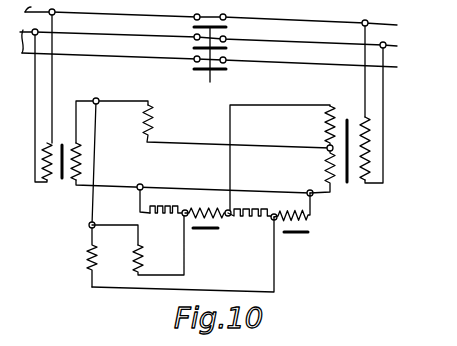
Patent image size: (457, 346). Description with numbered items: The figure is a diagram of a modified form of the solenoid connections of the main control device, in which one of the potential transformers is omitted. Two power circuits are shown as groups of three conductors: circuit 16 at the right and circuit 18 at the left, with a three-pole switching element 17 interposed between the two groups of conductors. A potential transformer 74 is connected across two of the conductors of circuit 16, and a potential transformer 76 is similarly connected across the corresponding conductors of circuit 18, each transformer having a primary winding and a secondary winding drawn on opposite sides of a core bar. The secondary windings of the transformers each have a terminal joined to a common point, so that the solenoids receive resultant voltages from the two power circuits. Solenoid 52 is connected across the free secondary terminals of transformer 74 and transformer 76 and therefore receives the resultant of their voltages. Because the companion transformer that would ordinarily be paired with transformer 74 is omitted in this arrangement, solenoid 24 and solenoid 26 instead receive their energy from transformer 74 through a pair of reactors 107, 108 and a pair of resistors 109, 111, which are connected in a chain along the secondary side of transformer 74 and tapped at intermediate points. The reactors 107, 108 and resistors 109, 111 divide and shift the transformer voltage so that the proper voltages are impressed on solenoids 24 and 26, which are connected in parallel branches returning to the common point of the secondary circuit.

The circuit 16 is at (380, 42).
The switch 17 is at (212, 80).
The circuit 18 is at (19, 30).
The solenoid 24 is at (86, 252).
The solenoid 26 is at (132, 255).
The solenoid 52 is at (152, 114).
The potential transformer 74 is at (347, 119).
The potential transformer 76 is at (60, 180).
The reactor 107 is at (210, 230).
The reactor 108 is at (298, 234).
The resistor 109 is at (165, 223).
The resistor 111 is at (248, 222).